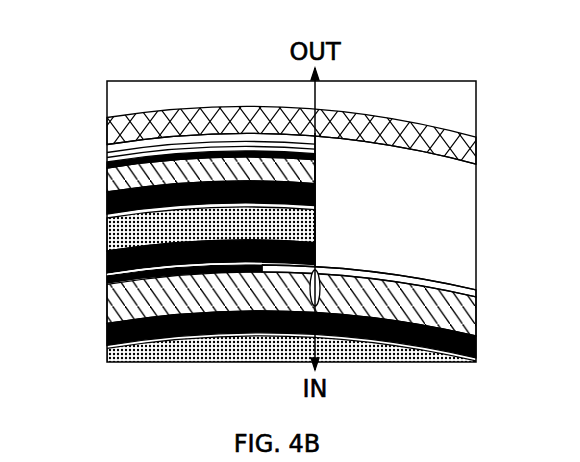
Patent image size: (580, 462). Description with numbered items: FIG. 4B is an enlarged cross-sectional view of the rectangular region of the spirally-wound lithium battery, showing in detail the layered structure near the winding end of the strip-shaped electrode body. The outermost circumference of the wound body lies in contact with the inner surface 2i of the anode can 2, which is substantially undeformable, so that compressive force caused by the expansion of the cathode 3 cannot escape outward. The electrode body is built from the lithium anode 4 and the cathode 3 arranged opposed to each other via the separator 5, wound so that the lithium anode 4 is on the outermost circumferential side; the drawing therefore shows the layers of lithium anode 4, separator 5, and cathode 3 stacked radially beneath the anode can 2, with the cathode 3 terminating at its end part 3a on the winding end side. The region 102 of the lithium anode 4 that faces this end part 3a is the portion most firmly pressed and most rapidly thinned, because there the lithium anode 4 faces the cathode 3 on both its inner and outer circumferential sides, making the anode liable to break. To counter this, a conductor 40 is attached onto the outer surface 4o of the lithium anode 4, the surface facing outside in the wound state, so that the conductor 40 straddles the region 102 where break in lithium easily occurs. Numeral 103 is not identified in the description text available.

The housing / casing 103 is at (120, 81).
The anode can 2 is at (395, 119).
The inner surface 2i is at (432, 158).
The outer surface 4o is at (231, 152).
The conductor 40 is at (112, 162).
The lithium anode 4 is at (117, 187).
The separator 5 is at (108, 213).
The cathode 3 is at (113, 243).
The end part 3a is at (319, 223).
The region 102 is at (327, 266).